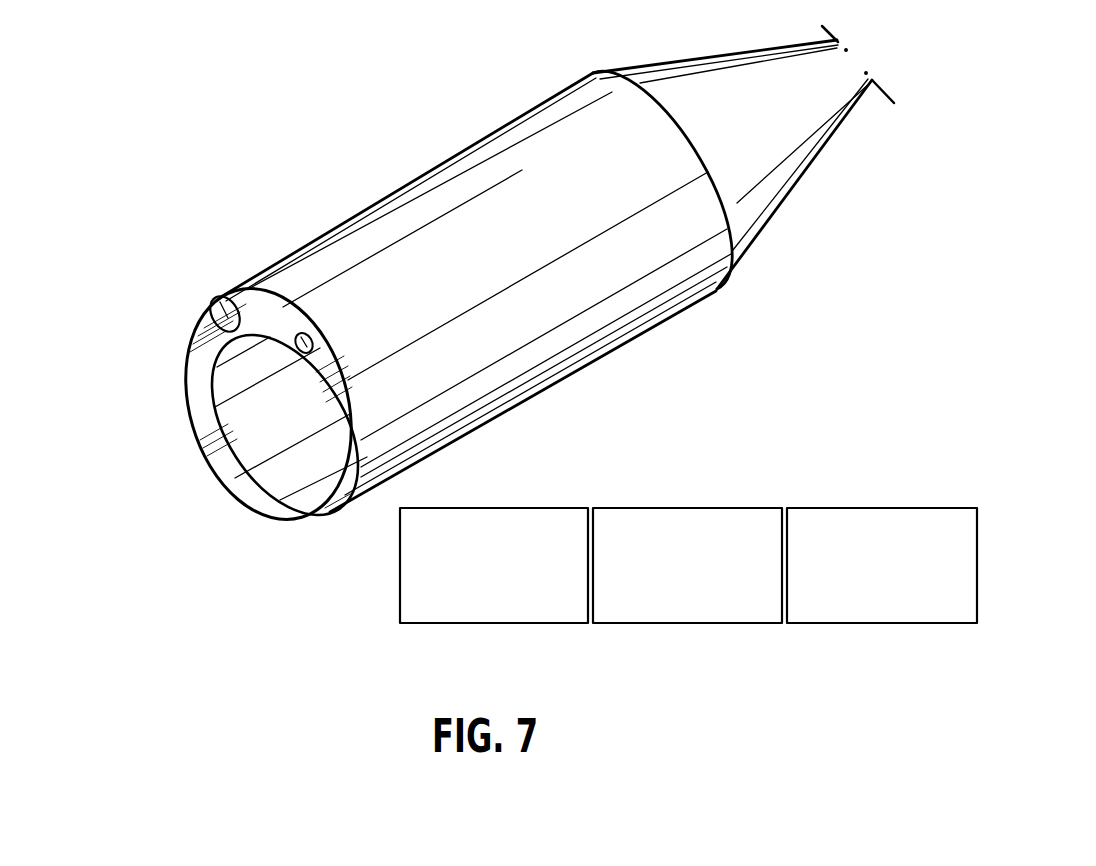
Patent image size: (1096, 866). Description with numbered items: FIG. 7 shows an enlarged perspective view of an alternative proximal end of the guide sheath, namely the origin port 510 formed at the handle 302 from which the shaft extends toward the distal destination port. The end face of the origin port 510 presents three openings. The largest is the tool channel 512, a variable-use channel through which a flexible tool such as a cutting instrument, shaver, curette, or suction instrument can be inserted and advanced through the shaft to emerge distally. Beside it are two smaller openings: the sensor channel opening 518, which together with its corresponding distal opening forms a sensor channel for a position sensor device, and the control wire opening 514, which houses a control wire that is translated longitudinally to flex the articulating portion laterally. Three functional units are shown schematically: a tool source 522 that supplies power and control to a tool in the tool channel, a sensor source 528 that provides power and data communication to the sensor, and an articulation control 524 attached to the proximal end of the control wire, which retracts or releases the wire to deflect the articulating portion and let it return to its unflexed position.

The origin port 510 is at (483, 296).
The handle 302 is at (537, 315).
The tool channel 512 is at (267, 437).
The sensor channel opening 518 is at (220, 308).
The control wire opening 514 is at (312, 349).
The tool source 522 is at (472, 612).
The sensor source 528 is at (666, 612).
The articulation control 524 is at (860, 612).